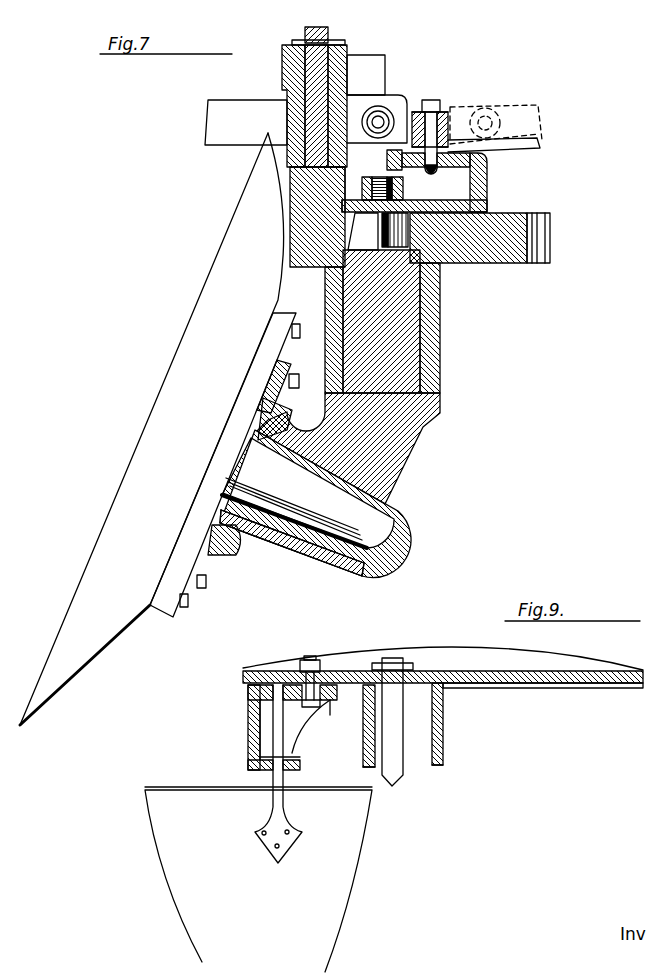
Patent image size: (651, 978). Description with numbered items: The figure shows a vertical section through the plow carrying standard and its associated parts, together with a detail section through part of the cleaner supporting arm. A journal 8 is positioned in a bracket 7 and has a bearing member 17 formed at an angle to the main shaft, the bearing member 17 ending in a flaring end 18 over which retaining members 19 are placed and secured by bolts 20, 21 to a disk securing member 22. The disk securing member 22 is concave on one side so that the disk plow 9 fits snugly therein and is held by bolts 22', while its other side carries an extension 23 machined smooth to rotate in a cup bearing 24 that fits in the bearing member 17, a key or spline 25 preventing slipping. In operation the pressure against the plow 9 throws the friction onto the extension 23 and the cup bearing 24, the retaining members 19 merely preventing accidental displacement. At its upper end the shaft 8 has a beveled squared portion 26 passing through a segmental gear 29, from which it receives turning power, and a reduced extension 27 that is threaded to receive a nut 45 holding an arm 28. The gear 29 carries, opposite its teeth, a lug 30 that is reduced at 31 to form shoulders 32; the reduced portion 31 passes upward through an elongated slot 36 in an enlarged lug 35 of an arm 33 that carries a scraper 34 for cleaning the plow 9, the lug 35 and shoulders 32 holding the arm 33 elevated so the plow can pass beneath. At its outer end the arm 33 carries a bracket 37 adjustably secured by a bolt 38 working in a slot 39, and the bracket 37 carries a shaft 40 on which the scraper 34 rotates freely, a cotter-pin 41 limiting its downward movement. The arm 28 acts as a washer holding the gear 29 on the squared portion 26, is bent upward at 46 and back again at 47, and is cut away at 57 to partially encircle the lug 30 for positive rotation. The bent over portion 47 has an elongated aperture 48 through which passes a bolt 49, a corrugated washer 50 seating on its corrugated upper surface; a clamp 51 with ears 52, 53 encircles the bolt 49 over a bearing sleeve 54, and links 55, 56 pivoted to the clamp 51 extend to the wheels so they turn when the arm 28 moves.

In FIG. 7, the bracket 7 is at (443, 312).
In FIG. 7, the journal 8 is at (423, 432).
In FIG. 7, the disk plow 9 is at (100, 668).
In FIG. 7, the bearing member 17 is at (307, 555).
In FIG. 7, the flaring end 18 is at (228, 543).
In FIG. 7, the retaining members 19 is at (293, 383).
In FIG. 7, the bolt 20 is at (220, 556).
In FIG. 7, the bolt 21 is at (270, 372).
In FIG. 7, the disk securing member 22 is at (218, 465).
In FIG. 7, the bolts 22' is at (200, 456).
In FIG. 7, the extension 23 is at (360, 520).
In FIG. 7, the cup bearing 24 is at (403, 513).
In FIG. 7, the key or spline 25 is at (260, 437).
In FIG. 7, the beveled squared portion 26 is at (378, 231).
In FIG. 7, the reduced extension 27 is at (374, 179).
In FIG. 7, the arm 28 is at (422, 204).
In FIG. 7, the segmental gear 29 is at (490, 253).
In FIG. 7, the lug or extension 30 is at (307, 185).
In FIG. 7, the reduced portion 31 is at (319, 30).
In FIG. 9, the reduced portion 31 is at (397, 783).
In FIG. 7, the shoulders 32 is at (290, 170).
In FIG. 7, the arm 33 is at (284, 72).
In FIG. 7, the nut 45 is at (434, 178).
In FIG. 7, the upward bend 46 is at (488, 192).
In FIG. 7, the bent over portion 47 is at (388, 158).
In FIG. 7, the slot or elongated aperture 48 is at (490, 162).
In FIG. 7, the bolt 49 is at (505, 139).
In FIG. 7, the corrugated washer or clamping member 50 is at (381, 107).
In FIG. 7, the clamp or bearing 51 is at (423, 105).
In FIG. 7, the ear 52 is at (365, 100).
In FIG. 7, the ear 53 is at (462, 113).
In FIG. 7, the bearing sleeve 54 is at (441, 108).
In FIG. 7, the arm or link 55 is at (353, 110).
In FIG. 7, the arm or link 56 is at (542, 118).
In FIG. 7, the cut away 57 is at (340, 212).
In FIG. 9, the scraper 34 is at (258, 879).
In FIG. 9, the enlarged lug 35 is at (444, 745).
In FIG. 9, the elongated slot 36 is at (432, 767).
In FIG. 9, the bracket 37 is at (247, 735).
In FIG. 9, the bolt 38 is at (320, 672).
In FIG. 9, the slot 39 is at (296, 670).
In FIG. 9, the shaft 40 is at (279, 737).
In FIG. 9, the cotter-pin 41 is at (292, 755).